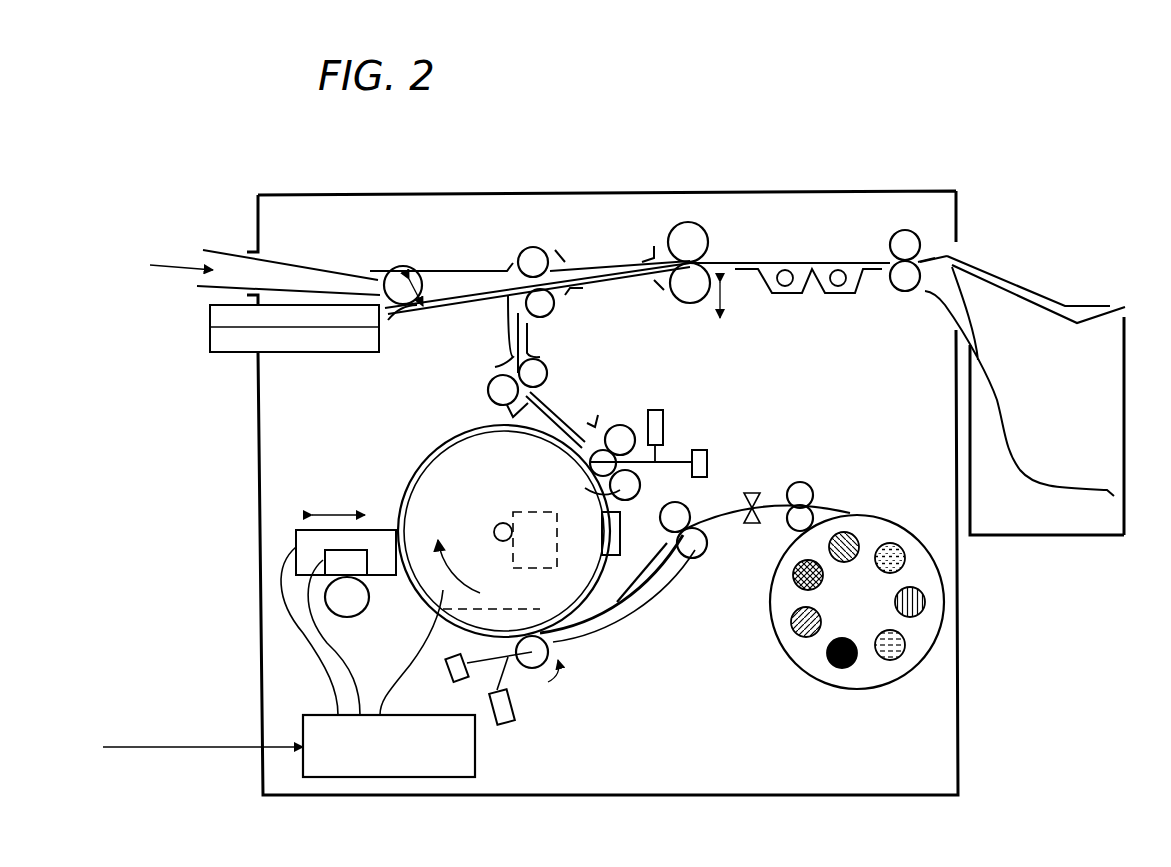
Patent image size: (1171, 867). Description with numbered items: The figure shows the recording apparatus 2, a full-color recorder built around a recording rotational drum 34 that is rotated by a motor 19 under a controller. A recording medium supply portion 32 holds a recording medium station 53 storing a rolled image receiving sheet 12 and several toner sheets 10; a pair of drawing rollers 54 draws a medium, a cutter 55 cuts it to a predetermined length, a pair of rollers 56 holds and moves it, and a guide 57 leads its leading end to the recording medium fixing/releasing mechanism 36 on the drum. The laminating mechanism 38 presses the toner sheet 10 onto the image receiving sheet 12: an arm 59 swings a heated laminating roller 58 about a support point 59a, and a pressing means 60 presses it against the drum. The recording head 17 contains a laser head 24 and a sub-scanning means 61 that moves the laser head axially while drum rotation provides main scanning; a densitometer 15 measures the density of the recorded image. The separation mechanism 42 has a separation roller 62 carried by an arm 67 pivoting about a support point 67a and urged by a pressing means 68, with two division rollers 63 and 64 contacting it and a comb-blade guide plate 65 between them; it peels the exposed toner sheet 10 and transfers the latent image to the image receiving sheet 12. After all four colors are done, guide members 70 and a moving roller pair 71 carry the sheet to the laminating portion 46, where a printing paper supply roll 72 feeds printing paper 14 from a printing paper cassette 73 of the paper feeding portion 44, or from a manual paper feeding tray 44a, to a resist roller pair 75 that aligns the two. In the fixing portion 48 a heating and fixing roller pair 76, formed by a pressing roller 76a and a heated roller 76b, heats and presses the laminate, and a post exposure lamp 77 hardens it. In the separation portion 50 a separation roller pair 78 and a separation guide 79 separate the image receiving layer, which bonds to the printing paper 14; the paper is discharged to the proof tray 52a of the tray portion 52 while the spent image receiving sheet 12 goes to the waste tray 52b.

The recording apparatus 2 is at (620, 170).
The toner sheet 10 is at (766, 560).
The image receiving sheet 12 is at (749, 435).
The printing paper 14 is at (460, 290).
The densitometer 15 is at (365, 545).
The recording head 17 is at (362, 563).
The motor 19 is at (515, 508).
The laser head 24 is at (390, 578).
The recording medium supply portion 32 is at (859, 619).
The recording rotational drum 34 is at (445, 445).
The recording medium fixing/releasing mechanism 36 is at (620, 558).
The laminating mechanism 38 is at (510, 708).
The separation mechanism 42 is at (652, 432).
The paper feeding portion 44 is at (265, 238).
The manual paper feeding tray 44a is at (310, 267).
The laminating portion 46 is at (558, 215).
The fixing portion 48 is at (808, 239).
The separation portion 50 is at (938, 226).
The tray portion 52 is at (1053, 379).
The proof tray 52a is at (1122, 310).
The waste tray 52b is at (1048, 540).
The recording medium station 53 is at (878, 515).
The drawing rollers 54 is at (452, 780).
The cutter 55 is at (757, 492).
The pair of rollers 56 is at (690, 512).
The guide 57 is at (630, 625).
The laminating roller 58 is at (556, 655).
The arm 59 is at (530, 697).
The support point 59a is at (450, 676).
The pressing means 60 is at (508, 723).
The sub-scanning means 61 is at (362, 615).
The separation roller 62 is at (590, 463).
The division roller 63 is at (628, 503).
The division roller 64 is at (622, 425).
The comb-blade guide plate 65 is at (640, 465).
The arm 67 is at (680, 462).
The support point 67a is at (708, 462).
The pressing means 68 is at (657, 413).
The guide members 70 is at (505, 345).
The moving roller pair 71 is at (545, 370).
The printing paper supply roll 72 is at (397, 265).
The printing paper cassette 73 is at (228, 355).
The resist roller pair 75 is at (522, 252).
The heating and fixing roller pair 76 is at (671, 238).
The pressing roller 76a is at (668, 240).
The heated roller 76b is at (672, 298).
The post exposure lamp 77 is at (838, 290).
The separation roller pair 78 is at (893, 240).
The separation guide 79 is at (940, 260).